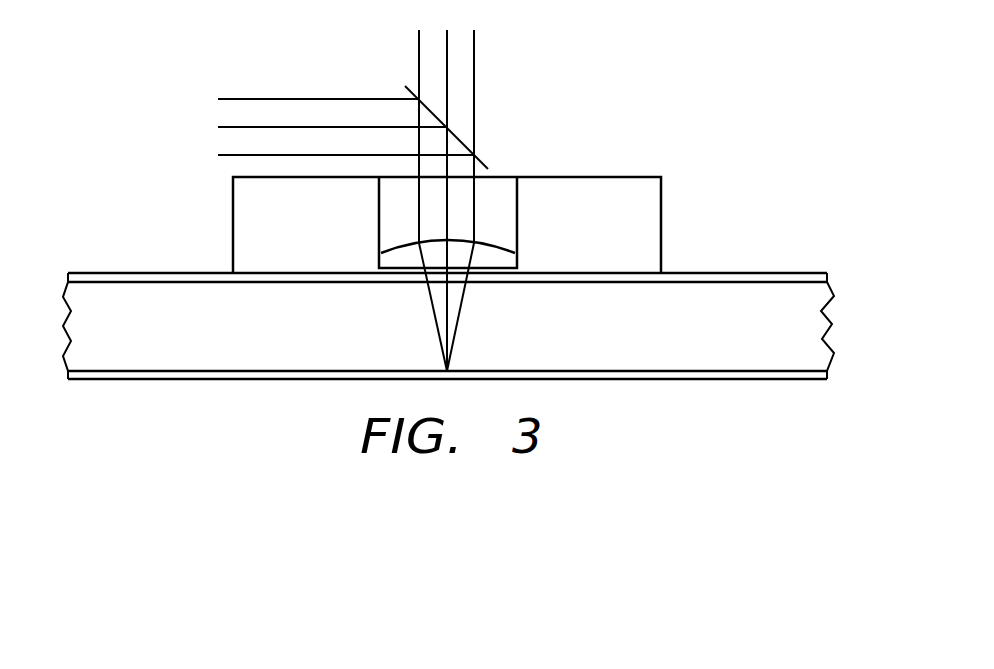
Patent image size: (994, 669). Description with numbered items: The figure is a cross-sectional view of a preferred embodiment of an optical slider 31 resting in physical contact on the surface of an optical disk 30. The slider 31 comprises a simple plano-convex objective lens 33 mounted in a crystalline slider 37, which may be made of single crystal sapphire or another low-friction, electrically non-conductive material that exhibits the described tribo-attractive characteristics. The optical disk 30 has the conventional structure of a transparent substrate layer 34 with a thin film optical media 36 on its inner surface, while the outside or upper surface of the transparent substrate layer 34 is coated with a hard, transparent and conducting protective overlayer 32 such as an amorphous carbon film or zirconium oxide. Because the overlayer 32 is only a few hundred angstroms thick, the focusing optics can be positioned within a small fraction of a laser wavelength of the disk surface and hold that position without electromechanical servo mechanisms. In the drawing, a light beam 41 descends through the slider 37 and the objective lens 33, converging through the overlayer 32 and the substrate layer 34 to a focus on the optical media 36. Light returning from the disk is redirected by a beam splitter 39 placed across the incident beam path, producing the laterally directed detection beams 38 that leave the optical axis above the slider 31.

The optical disk 30 is at (148, 391).
The optical slider 31 is at (489, 183).
The protective overlayer 32 is at (68, 273).
The plano-convex objective lens 33 is at (493, 253).
The transparent substrate layer 34 is at (65, 316).
The thin film optical media 36 is at (68, 376).
The crystalline slider 37 is at (615, 192).
The reflected detection beams 38 is at (218, 108).
The beam splitter 39 is at (478, 156).
The incident light beam 41 is at (463, 30).